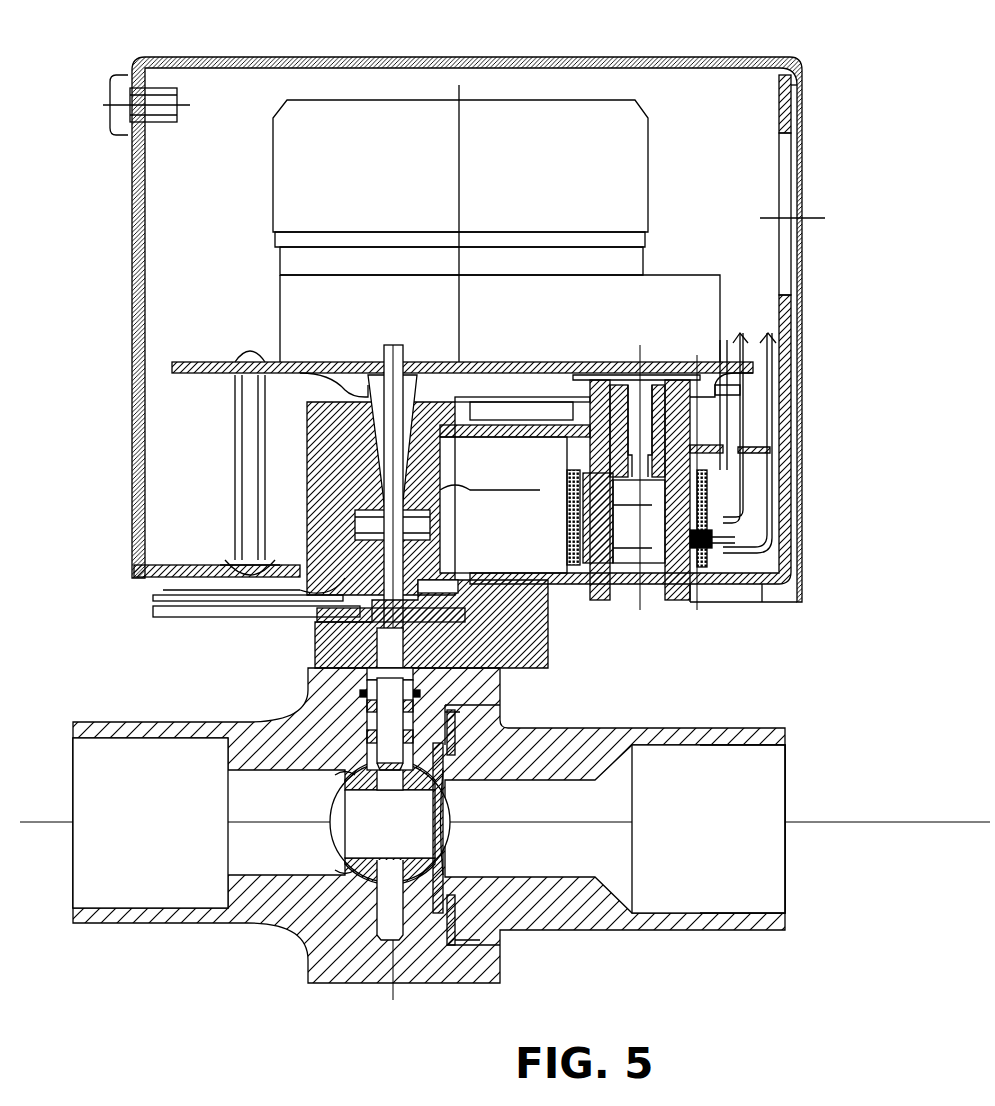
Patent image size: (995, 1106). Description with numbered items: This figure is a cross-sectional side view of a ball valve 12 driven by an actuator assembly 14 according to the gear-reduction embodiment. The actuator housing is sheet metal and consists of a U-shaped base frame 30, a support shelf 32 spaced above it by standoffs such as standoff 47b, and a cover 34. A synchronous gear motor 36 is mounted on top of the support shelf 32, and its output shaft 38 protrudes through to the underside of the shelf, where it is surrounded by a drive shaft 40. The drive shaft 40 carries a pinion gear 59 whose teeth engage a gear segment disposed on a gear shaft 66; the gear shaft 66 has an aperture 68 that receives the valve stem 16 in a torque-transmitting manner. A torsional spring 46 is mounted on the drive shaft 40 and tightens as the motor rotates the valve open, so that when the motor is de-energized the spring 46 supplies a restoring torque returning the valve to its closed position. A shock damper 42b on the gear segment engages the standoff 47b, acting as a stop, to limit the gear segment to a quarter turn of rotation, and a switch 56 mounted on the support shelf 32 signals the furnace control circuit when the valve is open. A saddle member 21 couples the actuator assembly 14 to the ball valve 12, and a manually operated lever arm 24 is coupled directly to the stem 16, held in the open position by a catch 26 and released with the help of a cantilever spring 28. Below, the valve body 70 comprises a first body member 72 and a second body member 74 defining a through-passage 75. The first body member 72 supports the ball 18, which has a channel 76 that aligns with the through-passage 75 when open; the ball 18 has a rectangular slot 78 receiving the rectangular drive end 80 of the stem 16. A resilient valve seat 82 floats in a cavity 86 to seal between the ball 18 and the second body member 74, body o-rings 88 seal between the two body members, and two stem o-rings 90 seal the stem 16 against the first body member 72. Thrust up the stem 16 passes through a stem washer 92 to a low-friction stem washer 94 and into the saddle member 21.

The ball valve 12 is at (752, 689).
The actuator assembly 14 is at (822, 157).
The valve stem 16 is at (400, 648).
The ball 18 is at (445, 770).
The saddle member 21 is at (528, 634).
The lever arm 24 is at (210, 617).
The catch 26 is at (172, 604).
The cantilever spring 28 is at (320, 612).
The base frame 30 is at (138, 272).
The support shelf 32 is at (193, 360).
The cover 34 is at (446, 57).
The synchronous gear motor 36 is at (622, 169).
The output shaft 38 is at (645, 395).
The drive shaft 40 is at (592, 518).
The shock damper 42b is at (500, 437).
The torsional spring 46 is at (585, 547).
The standoff 47b is at (248, 488).
The switch 56 is at (492, 530).
The pinion gear 59 is at (655, 432).
The gear shaft 66 is at (318, 440).
The aperture 68 is at (386, 528).
The valve body 70 is at (330, 990).
The first body member 72 is at (250, 912).
The second body member 74 is at (600, 912).
The through-passage 75 is at (760, 885).
The ball channel 76 is at (420, 840).
The rectangular slot 78 is at (350, 782).
The rectangular drive end 80 is at (380, 790).
The valve seat 82 is at (450, 790).
The cavity 86 is at (455, 742).
The body o-rings 88 is at (470, 710).
The stem o-rings 90 is at (367, 735).
The stem washer 92 is at (370, 690).
The low coefficient of friction stem washer 94 is at (415, 688).